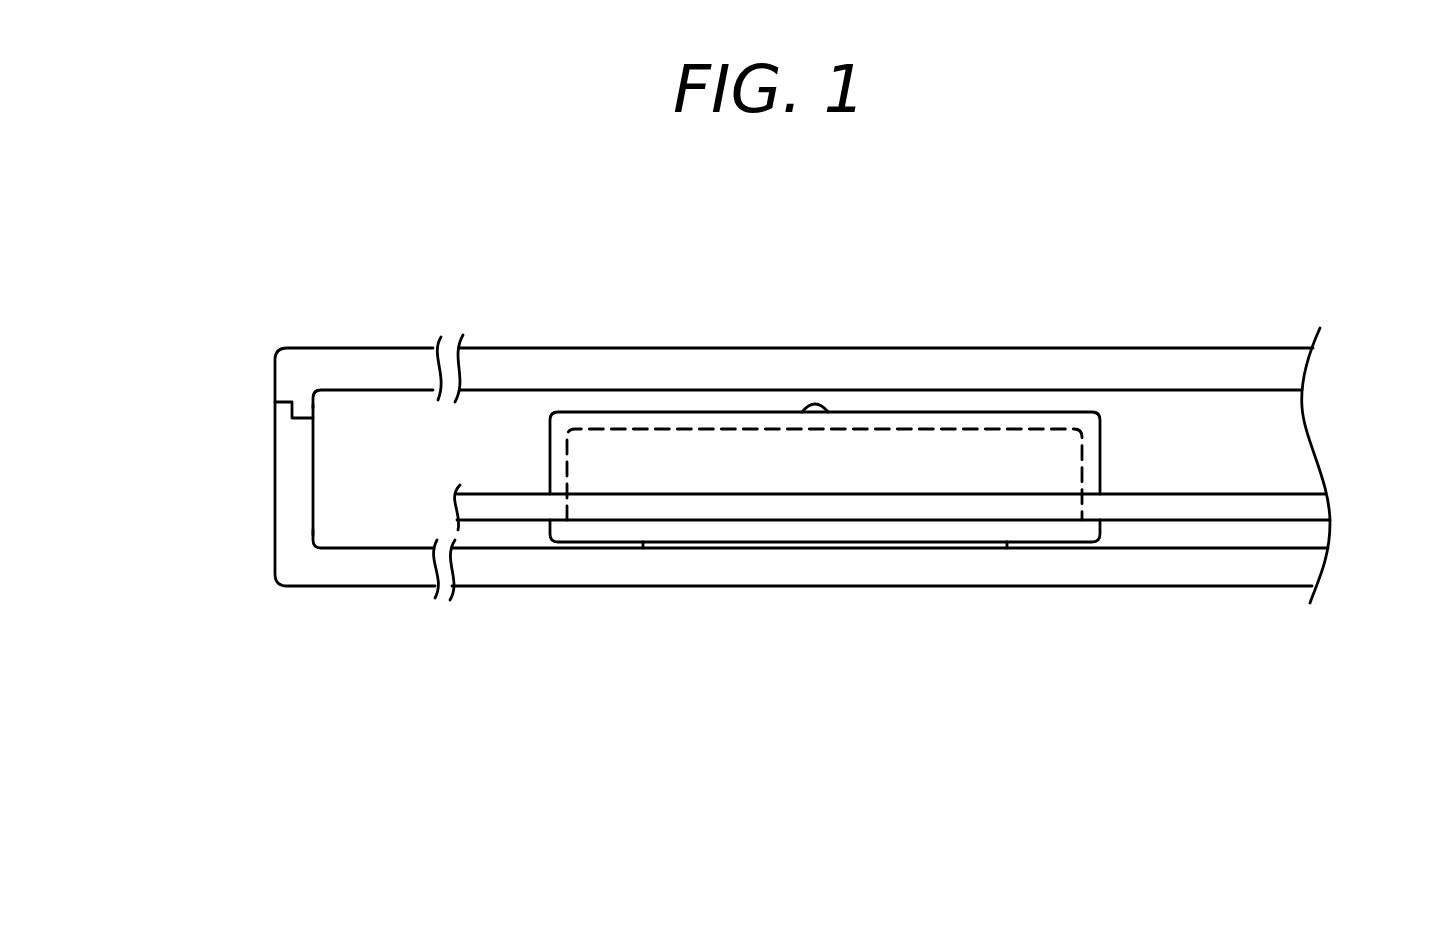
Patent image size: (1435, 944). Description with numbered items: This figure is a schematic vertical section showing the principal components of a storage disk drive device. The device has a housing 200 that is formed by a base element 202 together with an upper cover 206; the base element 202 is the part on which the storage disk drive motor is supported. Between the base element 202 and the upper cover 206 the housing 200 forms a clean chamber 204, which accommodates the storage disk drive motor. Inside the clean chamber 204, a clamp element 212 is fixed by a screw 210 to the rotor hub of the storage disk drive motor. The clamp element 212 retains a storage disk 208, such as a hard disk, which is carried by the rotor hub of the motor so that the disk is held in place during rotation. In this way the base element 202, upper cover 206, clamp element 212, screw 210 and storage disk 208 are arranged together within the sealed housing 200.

The housing 200 is at (1138, 347).
The base element 202 is at (880, 573).
The clean chamber 204 is at (335, 487).
The upper cover 206 is at (555, 375).
The storage disk 208 is at (1282, 503).
The screw 210 is at (816, 404).
The clamp element 212 is at (682, 418).